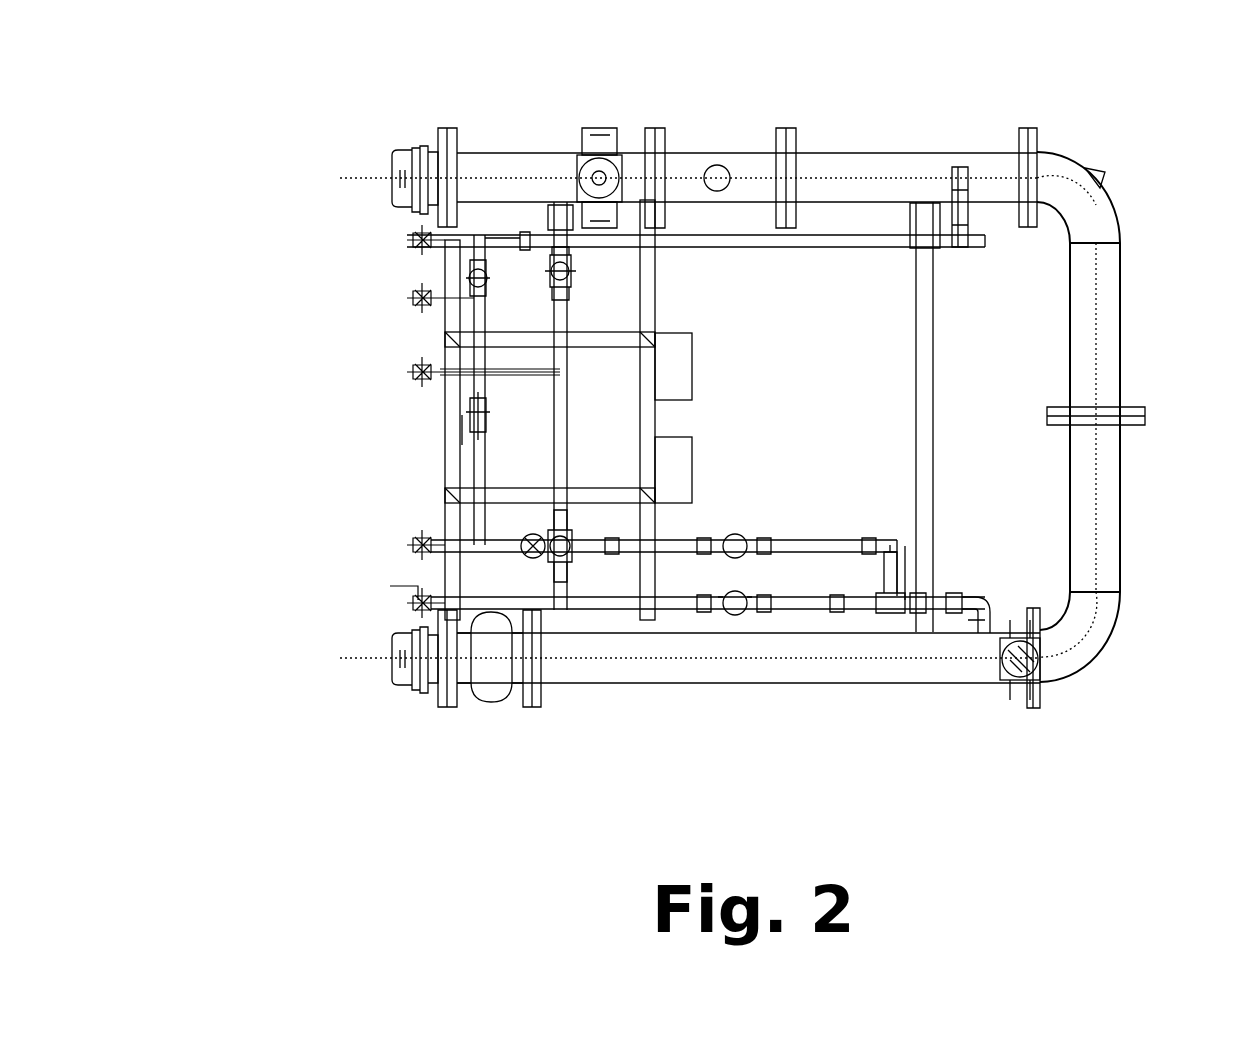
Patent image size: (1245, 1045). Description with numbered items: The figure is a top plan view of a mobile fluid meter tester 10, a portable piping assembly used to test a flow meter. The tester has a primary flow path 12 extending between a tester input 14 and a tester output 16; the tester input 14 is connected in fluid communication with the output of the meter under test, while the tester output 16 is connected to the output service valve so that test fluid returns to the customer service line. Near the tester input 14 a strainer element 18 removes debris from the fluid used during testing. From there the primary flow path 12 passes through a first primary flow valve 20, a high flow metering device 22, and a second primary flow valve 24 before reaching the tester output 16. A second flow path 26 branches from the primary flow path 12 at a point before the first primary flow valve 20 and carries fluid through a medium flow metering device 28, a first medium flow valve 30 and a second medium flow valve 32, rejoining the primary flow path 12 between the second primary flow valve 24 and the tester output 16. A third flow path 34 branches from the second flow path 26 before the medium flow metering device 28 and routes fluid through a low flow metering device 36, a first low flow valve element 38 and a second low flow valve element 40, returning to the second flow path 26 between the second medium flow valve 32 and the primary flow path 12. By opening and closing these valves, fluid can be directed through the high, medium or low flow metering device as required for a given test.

The mobile fluid meter tester 10 is at (1122, 180).
The primary flow path 12 is at (723, 683).
The tester input 14 is at (393, 676).
The tester output 16 is at (392, 163).
The strainer element 18 is at (487, 700).
The first primary flow valve 20 is at (1000, 668).
The high flow metering device 22 is at (745, 153).
The second primary flow valve 24 is at (585, 130).
The second flow path 26 is at (982, 590).
The medium flow metering device 28 is at (785, 600).
The first medium flow valve 30 is at (562, 538).
The second medium flow valve 32 is at (570, 258).
The third flow path 34 is at (885, 612).
The low flow metering device 36 is at (738, 540).
The first low flow valve element 38 is at (535, 545).
The second low flow valve element 40 is at (488, 285).